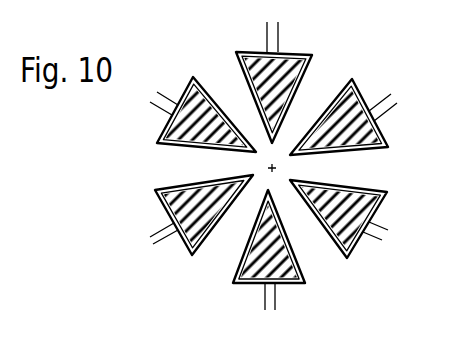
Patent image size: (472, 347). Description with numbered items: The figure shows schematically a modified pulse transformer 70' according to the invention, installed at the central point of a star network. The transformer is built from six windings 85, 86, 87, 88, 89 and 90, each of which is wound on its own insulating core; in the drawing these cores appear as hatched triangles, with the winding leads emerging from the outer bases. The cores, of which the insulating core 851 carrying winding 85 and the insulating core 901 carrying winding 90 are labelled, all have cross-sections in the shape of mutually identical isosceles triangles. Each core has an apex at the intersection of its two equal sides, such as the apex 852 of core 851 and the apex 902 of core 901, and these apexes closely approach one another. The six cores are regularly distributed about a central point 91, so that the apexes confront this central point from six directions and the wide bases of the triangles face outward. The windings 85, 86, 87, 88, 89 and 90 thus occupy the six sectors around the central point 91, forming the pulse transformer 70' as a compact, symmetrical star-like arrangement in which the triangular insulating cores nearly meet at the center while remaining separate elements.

The modified pulse transformer 70' is at (272, 170).
The winding 85 is at (190, 254).
The insulating core 851 is at (187, 203).
The apex 852 is at (250, 176).
The winding 86 is at (248, 285).
The winding 87 is at (387, 193).
The winding 88 is at (388, 150).
The winding 89 is at (311, 60).
The winding 90 is at (157, 144).
The insulating core 901 is at (192, 109).
The apex 902 is at (250, 134).
The central point 91 is at (273, 170).